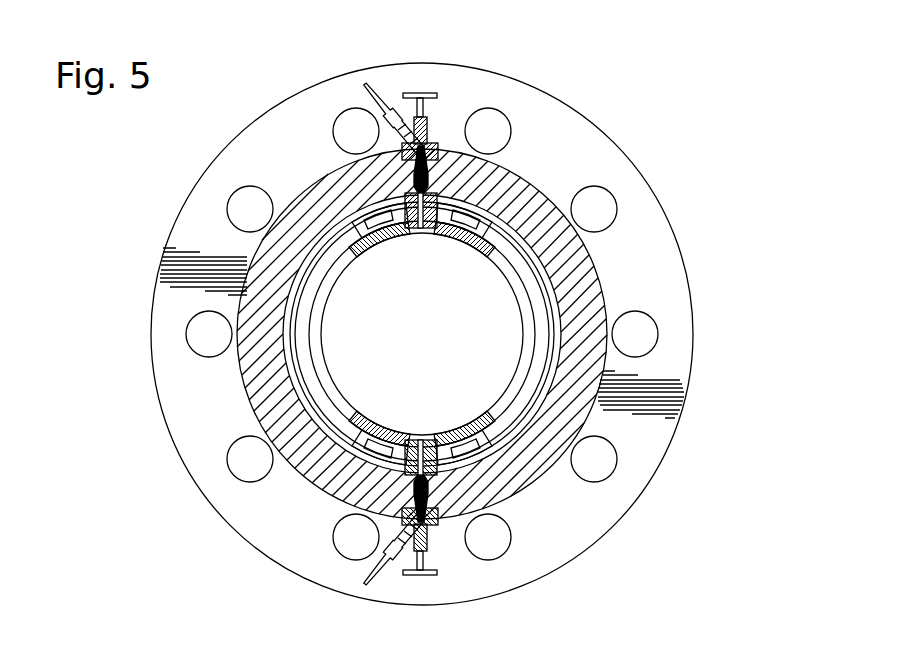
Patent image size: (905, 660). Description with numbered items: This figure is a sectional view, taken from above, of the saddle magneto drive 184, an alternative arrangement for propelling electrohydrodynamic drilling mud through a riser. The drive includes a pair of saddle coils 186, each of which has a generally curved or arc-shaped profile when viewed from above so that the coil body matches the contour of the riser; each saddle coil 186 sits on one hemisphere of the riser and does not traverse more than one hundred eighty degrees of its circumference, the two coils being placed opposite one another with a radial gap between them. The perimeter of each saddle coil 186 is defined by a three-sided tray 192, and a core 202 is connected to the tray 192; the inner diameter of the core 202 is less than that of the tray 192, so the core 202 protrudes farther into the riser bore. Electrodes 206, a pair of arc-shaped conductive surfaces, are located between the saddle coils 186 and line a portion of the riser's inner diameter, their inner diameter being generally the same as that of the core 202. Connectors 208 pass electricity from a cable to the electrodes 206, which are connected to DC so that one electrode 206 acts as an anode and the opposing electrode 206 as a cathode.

The saddle magneto drive 184 is at (668, 132).
The saddle coil 186 is at (563, 287).
The tray 192 is at (372, 443).
The core 202 is at (330, 277).
The electrodes 206 is at (478, 415).
The connectors 208 is at (437, 106).